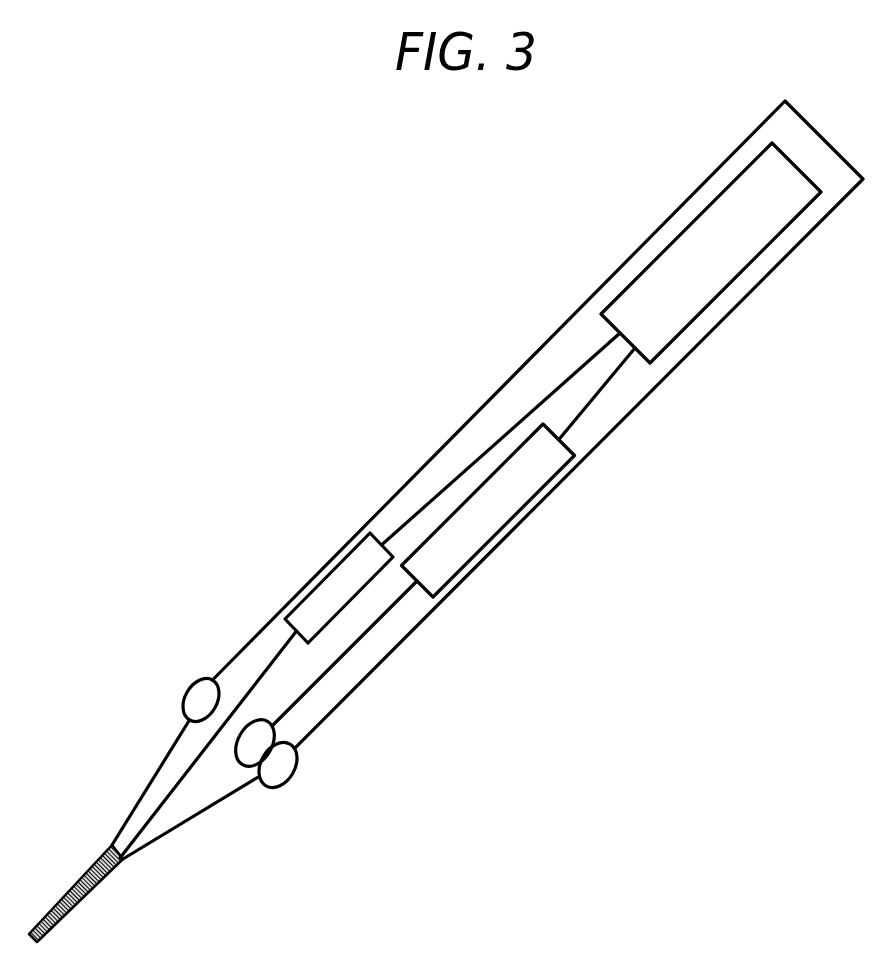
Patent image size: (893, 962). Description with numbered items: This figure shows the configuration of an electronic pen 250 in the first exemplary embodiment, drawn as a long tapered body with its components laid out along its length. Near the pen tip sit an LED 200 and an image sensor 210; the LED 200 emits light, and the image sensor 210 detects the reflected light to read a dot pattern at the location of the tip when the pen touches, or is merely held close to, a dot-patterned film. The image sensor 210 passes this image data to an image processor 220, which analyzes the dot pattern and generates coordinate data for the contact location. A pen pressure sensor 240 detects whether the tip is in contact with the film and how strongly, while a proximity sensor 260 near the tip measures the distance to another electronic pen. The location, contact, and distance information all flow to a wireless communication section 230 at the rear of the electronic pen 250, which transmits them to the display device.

The LED 200 is at (280, 767).
The image sensor 210 is at (263, 737).
The image processor 220 is at (487, 511).
The wireless communication section 230 is at (710, 268).
The pen pressure sensor 240 is at (330, 590).
The electronic pen 250 is at (373, 267).
The proximity sensor 260 is at (202, 697).